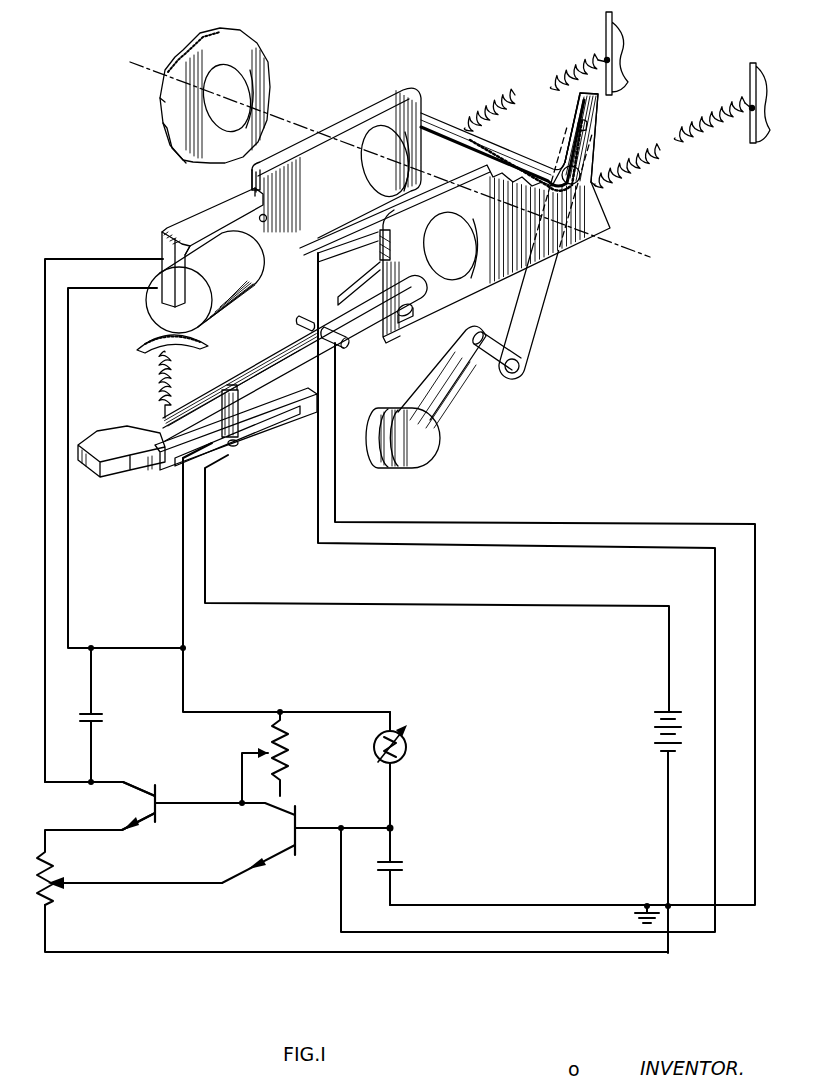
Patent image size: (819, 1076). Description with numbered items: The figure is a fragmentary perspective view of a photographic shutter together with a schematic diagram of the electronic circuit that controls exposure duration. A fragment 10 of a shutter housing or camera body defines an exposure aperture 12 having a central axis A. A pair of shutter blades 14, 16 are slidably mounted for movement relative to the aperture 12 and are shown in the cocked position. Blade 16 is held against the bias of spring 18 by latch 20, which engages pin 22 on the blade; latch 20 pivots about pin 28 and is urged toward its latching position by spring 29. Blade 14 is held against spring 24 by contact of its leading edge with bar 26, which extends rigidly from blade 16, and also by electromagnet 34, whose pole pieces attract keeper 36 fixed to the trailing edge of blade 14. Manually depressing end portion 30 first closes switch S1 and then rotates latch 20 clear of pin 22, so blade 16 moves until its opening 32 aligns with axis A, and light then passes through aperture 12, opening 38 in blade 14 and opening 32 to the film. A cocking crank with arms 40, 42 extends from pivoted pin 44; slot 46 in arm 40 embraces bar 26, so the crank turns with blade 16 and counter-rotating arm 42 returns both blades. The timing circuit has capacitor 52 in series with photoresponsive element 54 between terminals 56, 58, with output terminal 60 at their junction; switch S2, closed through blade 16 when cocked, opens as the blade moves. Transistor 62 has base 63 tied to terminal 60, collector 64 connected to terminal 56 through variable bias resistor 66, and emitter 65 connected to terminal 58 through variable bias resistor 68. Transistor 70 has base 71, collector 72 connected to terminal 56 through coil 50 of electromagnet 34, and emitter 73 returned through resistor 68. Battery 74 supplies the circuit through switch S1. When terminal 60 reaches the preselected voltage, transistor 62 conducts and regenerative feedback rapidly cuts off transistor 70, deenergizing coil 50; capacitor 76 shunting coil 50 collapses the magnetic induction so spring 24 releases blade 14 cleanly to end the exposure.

The fragment 10 is at (250, 52).
The exposure aperture 12 is at (244, 95).
The shutter blade 14 is at (360, 115).
The shutter blade 16 is at (455, 218).
The spring 18 is at (693, 128).
The latch 20 is at (275, 360).
The pin 22 is at (410, 319).
The spring 24 is at (469, 124).
The bar 26 is at (505, 154).
The pin 28 is at (348, 353).
The spring 29 is at (158, 381).
The end portion 30 is at (127, 452).
The opening 32 is at (464, 242).
The electromagnet 34 is at (165, 230).
The keeper 36 is at (249, 186).
The opening 38 is at (366, 169).
The arm 40 is at (541, 286).
The arm 42 is at (418, 445).
The pin 44 is at (490, 368).
The slot 46 is at (592, 127).
The coil 50 is at (231, 302).
The capacitor 52 is at (400, 862).
The photoresponsive element 54 is at (408, 750).
The terminal 56 is at (190, 648).
The terminal 58 is at (666, 904).
The terminal 60 is at (393, 825).
The transistor 62 is at (283, 828).
The base electrode 63 is at (316, 825).
The collector electrode 64 is at (286, 810).
The emitter electrode 65 is at (272, 858).
The variable bias resistor 66 is at (284, 762).
The variable bias resistor 68 is at (50, 876).
The transistor 70 is at (140, 803).
The base electrode 71 is at (160, 803).
The collector electrode 72 is at (141, 786).
The emitter electrode 73 is at (143, 818).
The battery 74 is at (655, 726).
The capacitor 76 is at (99, 715).
The switch S1 is at (229, 462).
The switch S2 is at (362, 256).
The axis A is at (391, 163).